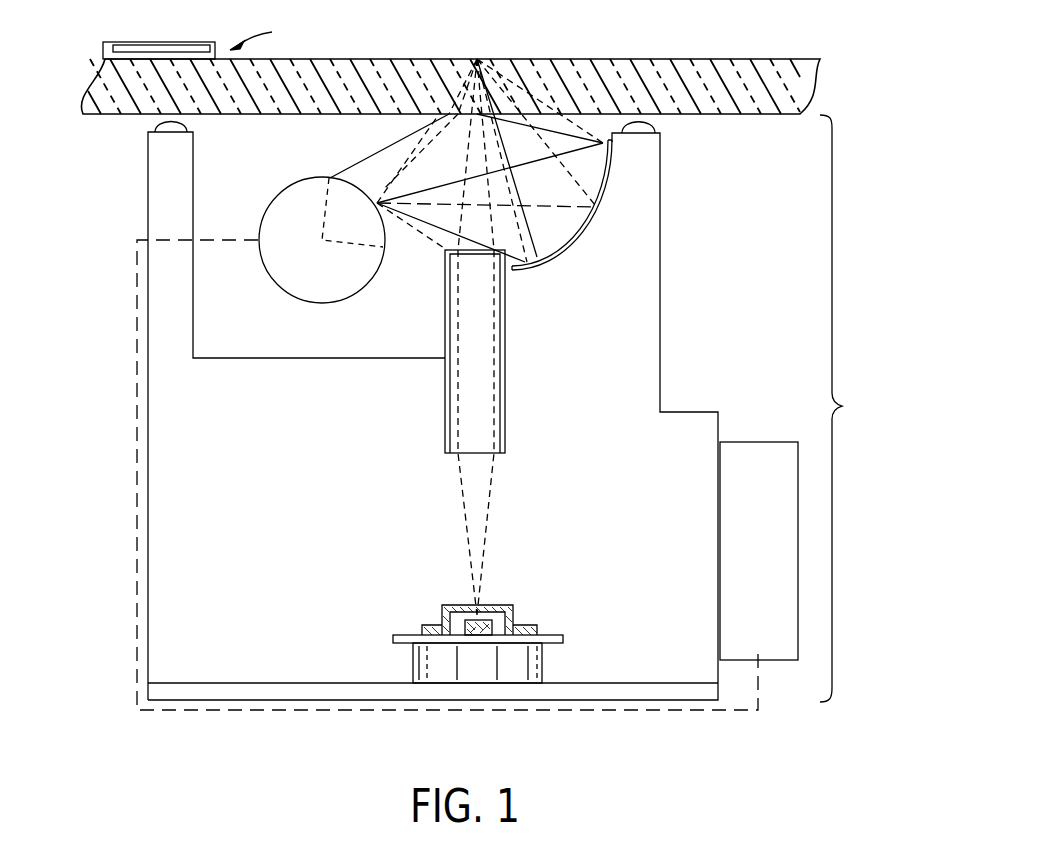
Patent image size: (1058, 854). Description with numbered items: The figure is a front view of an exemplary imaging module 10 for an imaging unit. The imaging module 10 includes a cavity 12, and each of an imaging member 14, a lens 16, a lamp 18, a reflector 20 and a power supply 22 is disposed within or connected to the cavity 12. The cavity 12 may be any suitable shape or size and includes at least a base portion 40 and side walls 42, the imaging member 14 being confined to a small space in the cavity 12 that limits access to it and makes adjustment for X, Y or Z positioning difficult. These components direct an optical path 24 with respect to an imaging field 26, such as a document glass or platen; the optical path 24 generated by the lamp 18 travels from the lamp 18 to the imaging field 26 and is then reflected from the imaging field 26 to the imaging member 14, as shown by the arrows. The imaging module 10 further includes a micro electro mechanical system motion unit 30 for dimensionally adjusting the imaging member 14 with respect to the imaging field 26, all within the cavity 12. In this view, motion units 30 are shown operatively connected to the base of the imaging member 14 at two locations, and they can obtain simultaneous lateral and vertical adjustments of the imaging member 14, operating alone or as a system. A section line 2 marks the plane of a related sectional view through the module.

The section line 2- 2 is at (477, 59).
The imaging module 10 is at (847, 408).
The cavity 12 is at (662, 345).
The imaging member 14 is at (522, 617).
The lens 16 is at (506, 404).
The lamp 18 is at (283, 208).
The reflector 20 is at (600, 212).
The power supply 22 is at (768, 441).
The optical path 24 is at (362, 156).
The imaging field 26 is at (707, 70).
The motion unit 30 is at (535, 670).
The base portion 40 is at (178, 683).
The side walls 42 is at (148, 522).